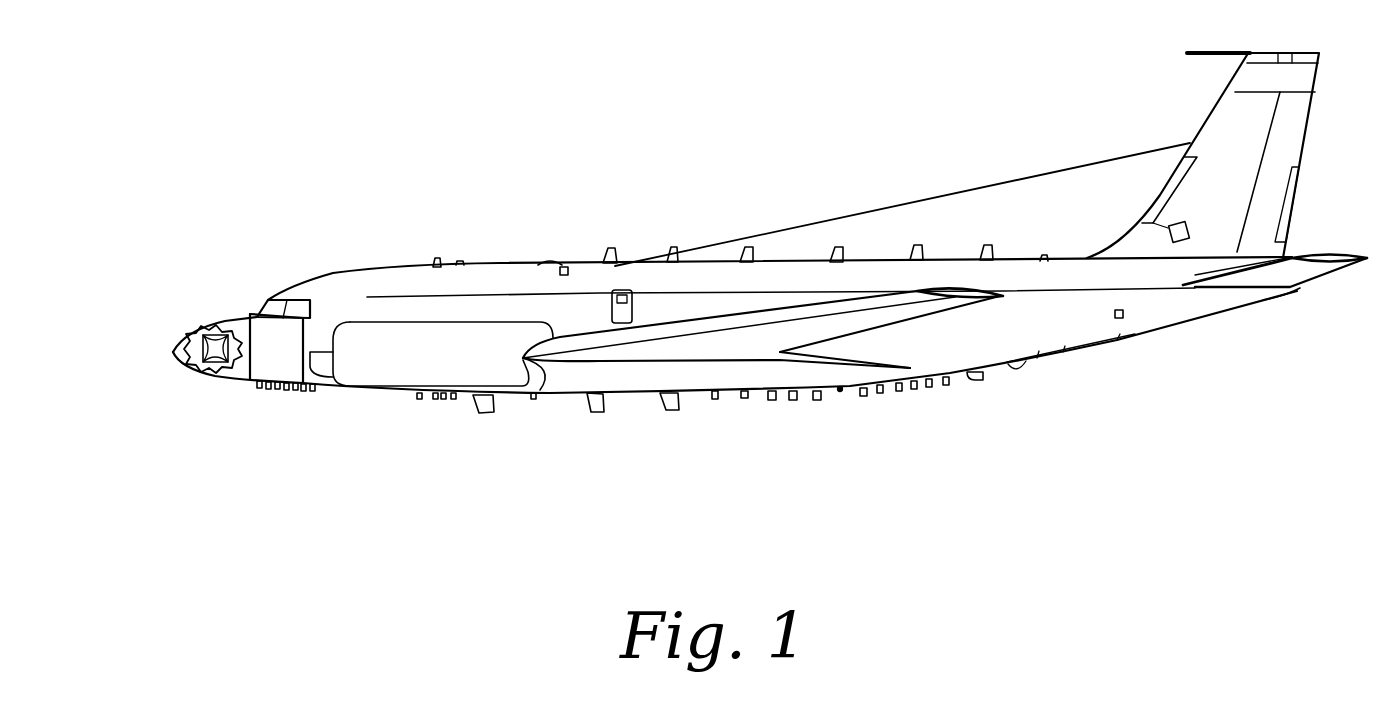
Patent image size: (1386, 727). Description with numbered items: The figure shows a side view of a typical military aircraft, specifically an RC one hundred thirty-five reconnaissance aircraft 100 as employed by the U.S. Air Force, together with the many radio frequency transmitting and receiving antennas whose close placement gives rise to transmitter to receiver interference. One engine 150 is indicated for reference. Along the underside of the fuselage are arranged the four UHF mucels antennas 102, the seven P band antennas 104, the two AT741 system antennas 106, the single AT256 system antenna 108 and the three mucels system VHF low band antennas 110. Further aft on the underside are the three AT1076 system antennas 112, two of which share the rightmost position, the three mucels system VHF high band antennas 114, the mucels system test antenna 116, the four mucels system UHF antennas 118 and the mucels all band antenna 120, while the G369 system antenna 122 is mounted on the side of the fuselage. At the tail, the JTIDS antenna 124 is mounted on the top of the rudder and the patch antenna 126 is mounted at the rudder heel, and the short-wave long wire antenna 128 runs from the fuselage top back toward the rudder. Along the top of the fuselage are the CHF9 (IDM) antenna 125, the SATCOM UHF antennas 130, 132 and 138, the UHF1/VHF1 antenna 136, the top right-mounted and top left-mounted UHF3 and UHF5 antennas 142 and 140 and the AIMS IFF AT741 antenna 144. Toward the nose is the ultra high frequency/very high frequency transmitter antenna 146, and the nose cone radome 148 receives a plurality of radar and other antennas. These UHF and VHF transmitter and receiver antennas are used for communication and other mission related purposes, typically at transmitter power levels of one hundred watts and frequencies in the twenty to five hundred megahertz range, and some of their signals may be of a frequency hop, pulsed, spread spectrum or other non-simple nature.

The RC 135 reconnaissance military aircraft 100 is at (328, 243).
The UHF mucels antennas 102 is at (259, 388).
The P band antennas 104 is at (302, 391).
The AT741 system antennas 106 is at (444, 399).
The AT256 system antenna 108 is at (493, 405).
The mucels system VHF low band antennas 110 is at (598, 412).
The AT1076 system antennas 112 is at (715, 400).
The mucels system VHF high band antennas 114 is at (773, 400).
The mucels system test antenna 116 is at (865, 397).
The mucels system UHF antennas 118 is at (880, 394).
The mucels all band antenna 120 is at (983, 380).
The G369 system antenna 122 is at (1123, 317).
The JTIDS antenna 124 is at (1302, 52).
The CHF9 (IDM) antenna 125 is at (1043, 254).
The patch antenna 126 is at (1158, 208).
The short-wave long wire antenna 128 is at (1080, 167).
The SATCOM UHF antennas 130 is at (983, 245).
The SATCOM UHF antenna 132 is at (838, 247).
The UHF1/VHF1 antenna 136 is at (747, 247).
The SATCOM UHF antennas 138 is at (612, 248).
The UHF5 antenna 140 is at (540, 262).
The UHF3 antenna 142 is at (565, 266).
The AIMS IFF AT741 antenna 144 is at (460, 264).
The ultra high frequency/very high frequency transmitter antenna 146 is at (436, 259).
The nose cone radome 148 is at (238, 323).
The engine 150 is at (371, 318).